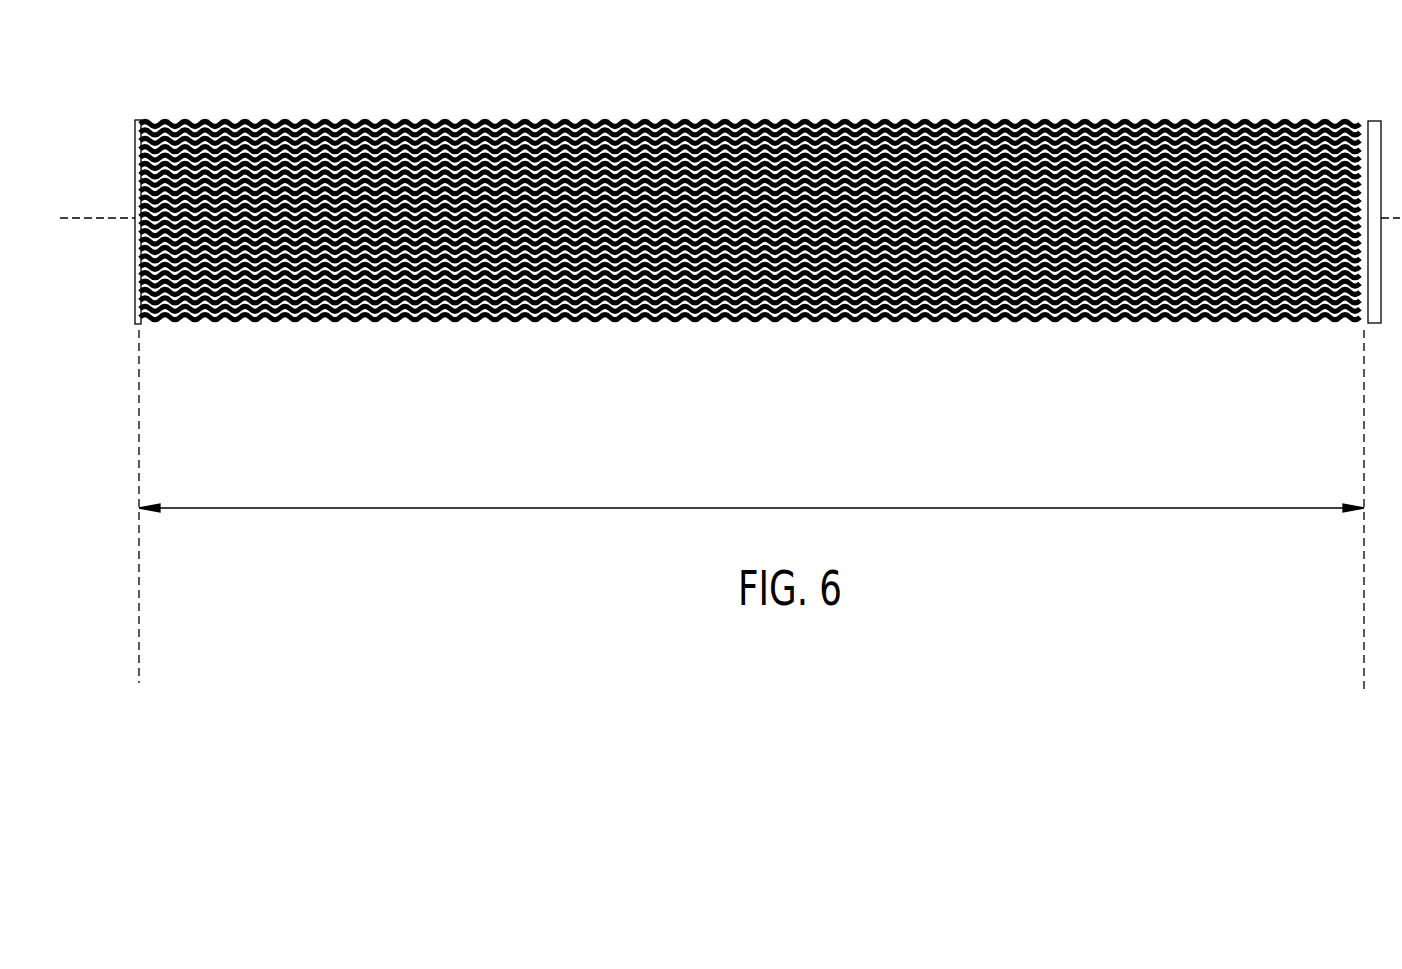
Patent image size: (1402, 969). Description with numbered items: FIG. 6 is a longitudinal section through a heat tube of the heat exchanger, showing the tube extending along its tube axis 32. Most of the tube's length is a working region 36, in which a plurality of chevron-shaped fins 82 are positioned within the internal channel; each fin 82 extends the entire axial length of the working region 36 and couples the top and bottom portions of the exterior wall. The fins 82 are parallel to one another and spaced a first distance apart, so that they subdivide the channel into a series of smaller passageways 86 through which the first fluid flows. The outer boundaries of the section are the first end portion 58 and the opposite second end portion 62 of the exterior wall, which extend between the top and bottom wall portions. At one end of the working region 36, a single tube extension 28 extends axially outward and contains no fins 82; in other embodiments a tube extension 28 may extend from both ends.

The tube extension 28 is at (1373, 290).
The tube axis 32 is at (73, 220).
The working region 36 is at (1145, 508).
The first end portion 58 is at (470, 120).
The second end portion 62 is at (417, 325).
The fins 82 is at (983, 218).
The passageways 86 is at (830, 287).